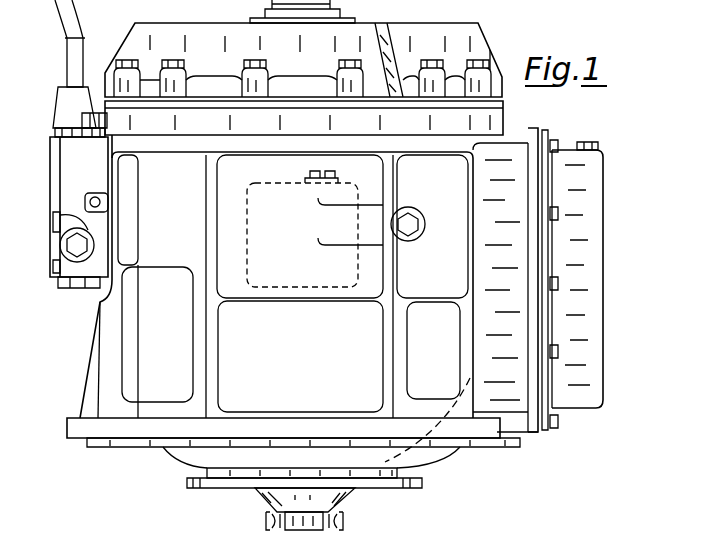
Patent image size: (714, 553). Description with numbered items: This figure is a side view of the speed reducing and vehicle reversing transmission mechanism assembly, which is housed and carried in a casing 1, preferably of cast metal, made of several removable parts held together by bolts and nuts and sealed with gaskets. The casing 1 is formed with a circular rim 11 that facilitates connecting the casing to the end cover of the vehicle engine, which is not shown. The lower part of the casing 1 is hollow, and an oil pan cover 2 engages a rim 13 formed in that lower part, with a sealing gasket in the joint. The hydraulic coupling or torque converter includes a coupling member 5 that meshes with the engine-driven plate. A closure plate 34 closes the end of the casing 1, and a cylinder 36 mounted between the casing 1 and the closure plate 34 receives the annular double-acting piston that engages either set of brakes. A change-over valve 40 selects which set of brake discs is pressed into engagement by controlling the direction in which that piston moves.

The casing 1 is at (227, 390).
The oil pan cover 2 is at (587, 395).
The coupling member 5 is at (333, 495).
The circular rim 11 is at (78, 430).
The rim 13 is at (540, 433).
The closure plate 34 is at (122, 105).
The cylinder 36 is at (488, 129).
The change-over valve 40 is at (50, 218).